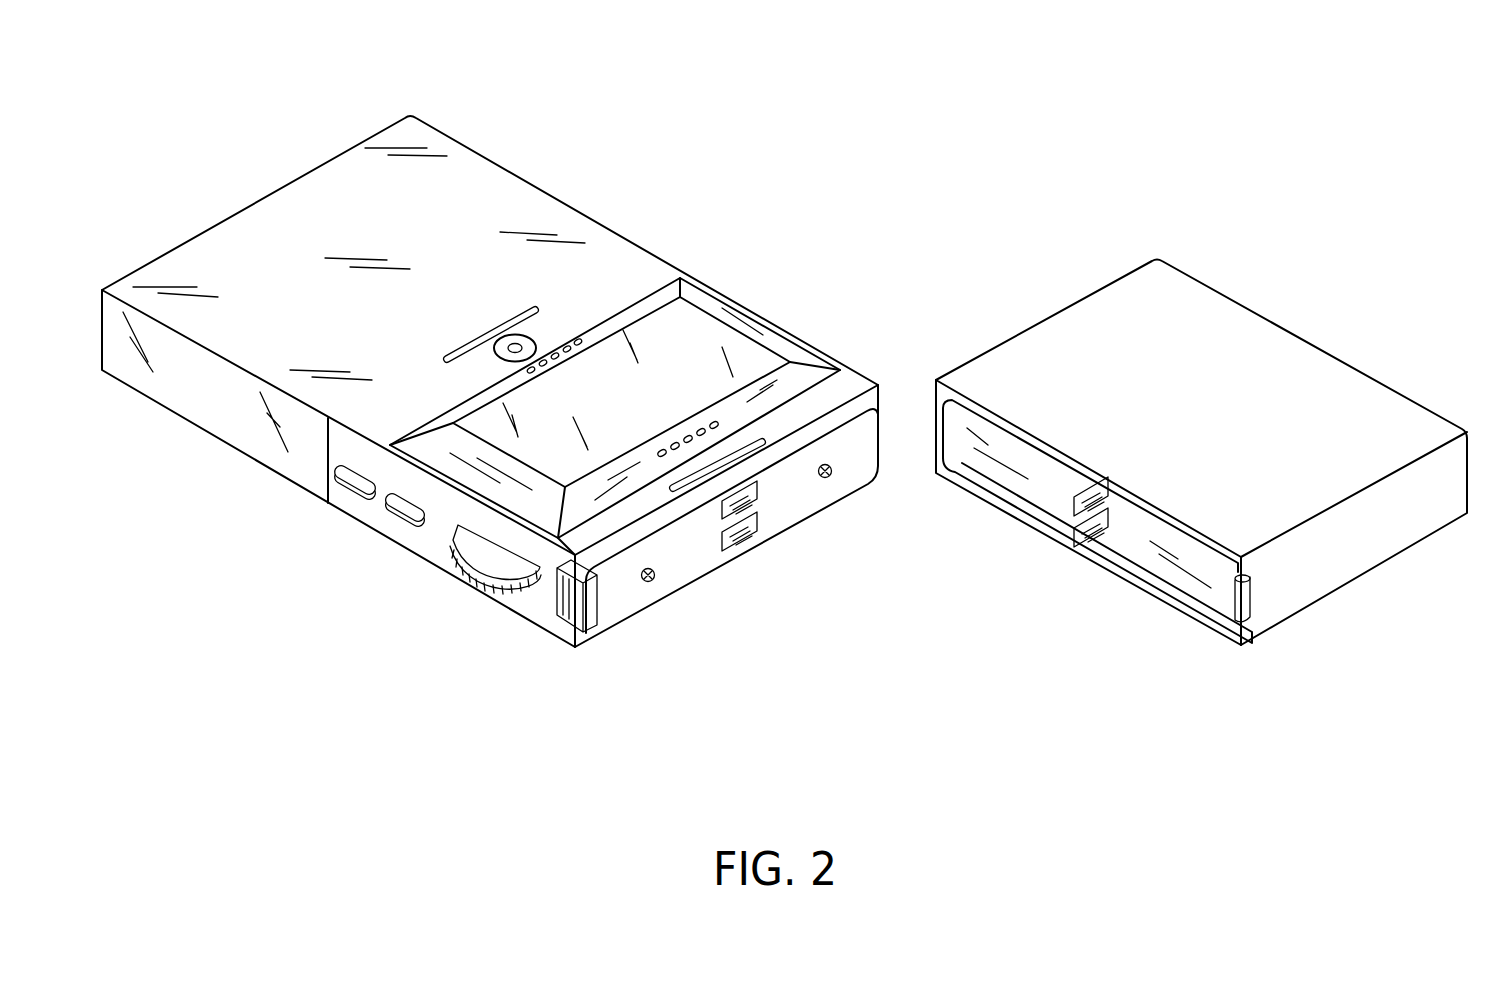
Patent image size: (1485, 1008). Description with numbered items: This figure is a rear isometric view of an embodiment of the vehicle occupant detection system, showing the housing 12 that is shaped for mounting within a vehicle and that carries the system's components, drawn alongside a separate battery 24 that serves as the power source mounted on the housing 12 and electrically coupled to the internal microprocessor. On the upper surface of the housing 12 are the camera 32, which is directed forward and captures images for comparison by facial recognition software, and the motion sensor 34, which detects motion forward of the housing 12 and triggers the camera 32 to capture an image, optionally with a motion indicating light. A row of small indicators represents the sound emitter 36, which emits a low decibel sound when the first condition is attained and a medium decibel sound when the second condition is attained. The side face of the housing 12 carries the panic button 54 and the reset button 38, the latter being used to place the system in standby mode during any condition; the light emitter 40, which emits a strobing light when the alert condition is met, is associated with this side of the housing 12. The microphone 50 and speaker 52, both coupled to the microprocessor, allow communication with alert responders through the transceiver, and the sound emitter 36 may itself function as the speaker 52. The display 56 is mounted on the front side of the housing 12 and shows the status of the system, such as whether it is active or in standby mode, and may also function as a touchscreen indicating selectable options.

The housing 12 is at (586, 332).
The battery 24 is at (1196, 541).
The camera 32 is at (515, 344).
The motion sensor 34 is at (489, 333).
The sound emitter 36 is at (586, 334).
The reset button 38 is at (405, 516).
The light emitter 40 is at (148, 363).
The microphone 50 is at (664, 456).
The speaker 52 is at (718, 424).
The panic button 54 is at (357, 484).
The display 56 is at (727, 360).